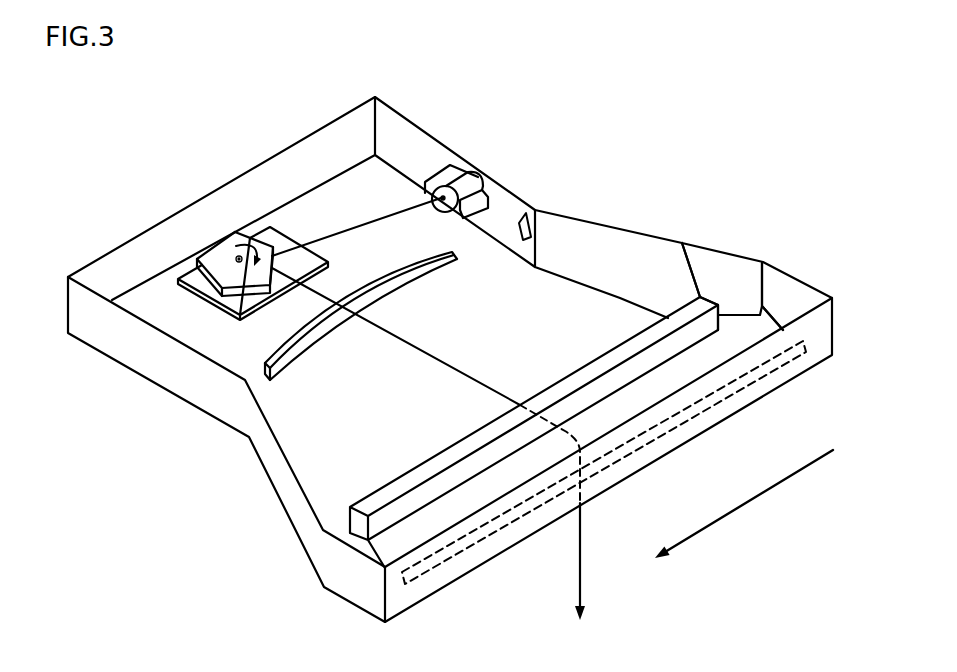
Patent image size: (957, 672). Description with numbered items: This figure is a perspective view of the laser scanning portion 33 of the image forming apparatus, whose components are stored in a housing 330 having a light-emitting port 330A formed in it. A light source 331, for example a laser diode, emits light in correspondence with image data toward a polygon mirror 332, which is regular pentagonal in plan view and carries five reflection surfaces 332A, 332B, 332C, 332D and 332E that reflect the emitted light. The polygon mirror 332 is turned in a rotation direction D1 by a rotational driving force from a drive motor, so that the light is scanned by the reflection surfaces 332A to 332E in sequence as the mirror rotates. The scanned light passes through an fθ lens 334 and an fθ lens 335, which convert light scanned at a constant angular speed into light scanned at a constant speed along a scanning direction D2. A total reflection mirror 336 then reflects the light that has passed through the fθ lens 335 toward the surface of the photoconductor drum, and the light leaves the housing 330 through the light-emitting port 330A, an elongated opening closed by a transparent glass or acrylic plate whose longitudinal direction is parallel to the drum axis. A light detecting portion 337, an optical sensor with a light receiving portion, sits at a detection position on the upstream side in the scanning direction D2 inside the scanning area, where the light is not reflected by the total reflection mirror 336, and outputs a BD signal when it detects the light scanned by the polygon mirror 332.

The laser scanning portion 33 is at (547, 112).
The housing 330 is at (292, 146).
The light-emitting port 330A is at (481, 545).
The light source 331 is at (465, 172).
The polygon mirror 332 is at (212, 229).
The reflection surface 332A is at (272, 284).
The reflection surface 332B is at (272, 247).
The reflection surface 332C is at (197, 257).
The reflection surface 332D is at (203, 285).
The reflection surface 332E is at (228, 293).
The fθ lens 334 is at (262, 366).
The fθ lens 335 is at (702, 296).
The total reflection mirror 336 is at (772, 305).
The light detecting portion 337 is at (535, 209).
The rotation direction D1 is at (260, 240).
The scanning direction D2 is at (744, 506).